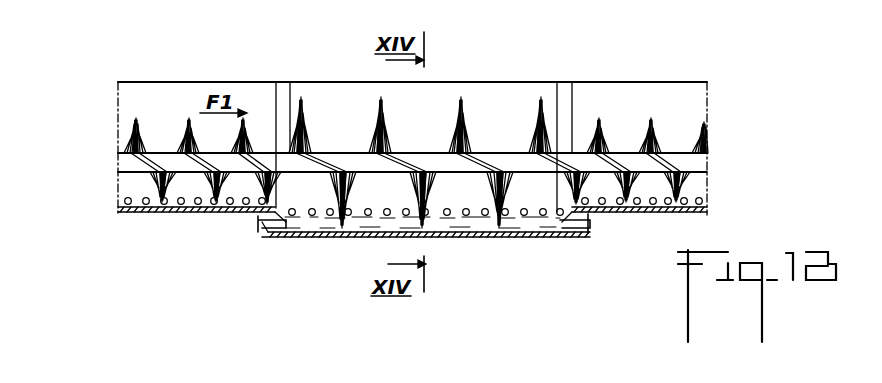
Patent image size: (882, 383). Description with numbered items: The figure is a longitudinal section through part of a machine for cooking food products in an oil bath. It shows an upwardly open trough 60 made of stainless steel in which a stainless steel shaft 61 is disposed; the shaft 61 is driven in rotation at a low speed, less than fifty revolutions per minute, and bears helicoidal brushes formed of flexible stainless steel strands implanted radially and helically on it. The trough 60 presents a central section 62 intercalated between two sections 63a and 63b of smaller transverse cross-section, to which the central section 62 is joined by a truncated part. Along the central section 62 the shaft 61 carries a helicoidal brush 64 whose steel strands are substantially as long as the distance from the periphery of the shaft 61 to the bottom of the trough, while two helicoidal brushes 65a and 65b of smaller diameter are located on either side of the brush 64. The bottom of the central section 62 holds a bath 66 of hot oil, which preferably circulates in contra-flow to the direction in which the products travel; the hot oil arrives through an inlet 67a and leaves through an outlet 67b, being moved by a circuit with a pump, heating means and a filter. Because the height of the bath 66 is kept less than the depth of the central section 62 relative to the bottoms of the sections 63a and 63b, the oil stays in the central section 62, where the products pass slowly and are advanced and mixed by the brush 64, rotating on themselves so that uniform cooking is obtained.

The trough 60 is at (246, 82).
The shaft 61 is at (491, 155).
The central section 62 is at (350, 238).
The section 63a is at (184, 213).
The section 63b is at (634, 214).
The helicoidal brush 64 is at (386, 119).
The helicoidal brush 65a is at (130, 126).
The helicoidal brush 65b is at (648, 128).
The bath of hot oil 66 is at (473, 238).
The inlet 67a is at (578, 230).
The outlet 67b is at (268, 230).